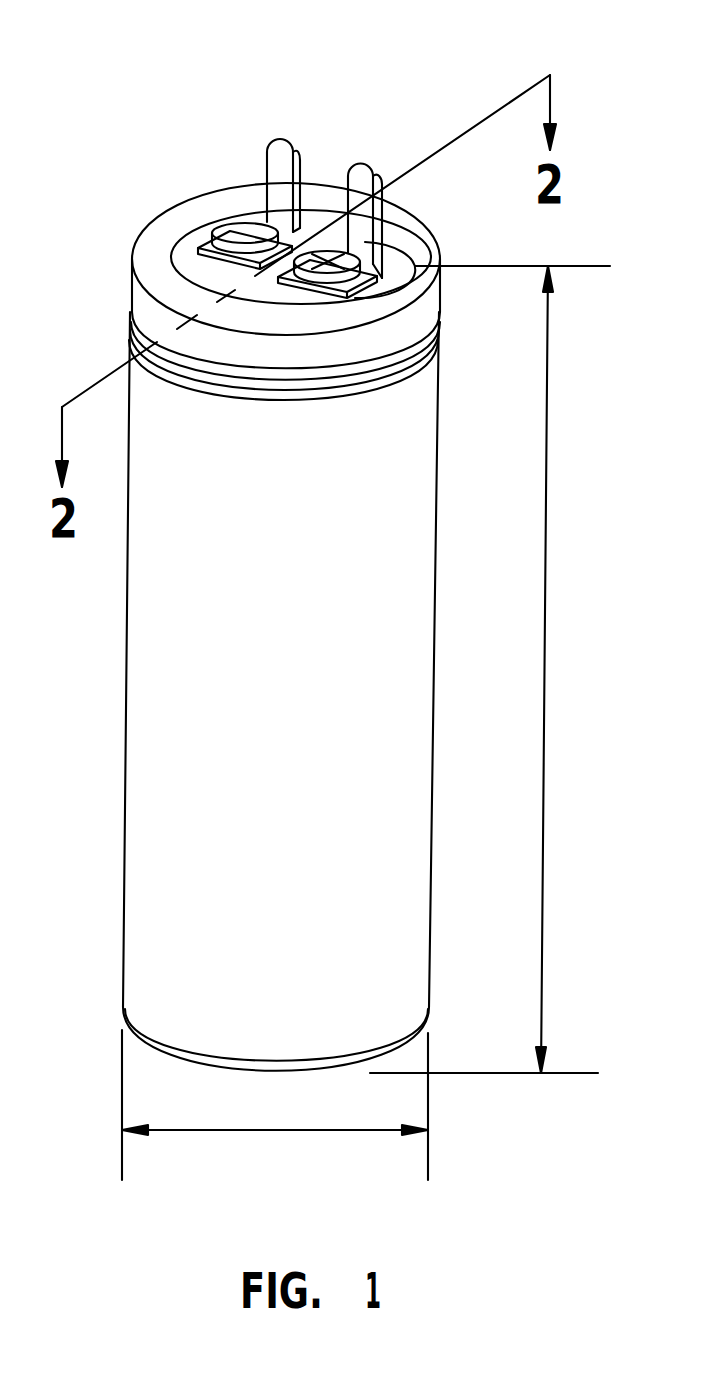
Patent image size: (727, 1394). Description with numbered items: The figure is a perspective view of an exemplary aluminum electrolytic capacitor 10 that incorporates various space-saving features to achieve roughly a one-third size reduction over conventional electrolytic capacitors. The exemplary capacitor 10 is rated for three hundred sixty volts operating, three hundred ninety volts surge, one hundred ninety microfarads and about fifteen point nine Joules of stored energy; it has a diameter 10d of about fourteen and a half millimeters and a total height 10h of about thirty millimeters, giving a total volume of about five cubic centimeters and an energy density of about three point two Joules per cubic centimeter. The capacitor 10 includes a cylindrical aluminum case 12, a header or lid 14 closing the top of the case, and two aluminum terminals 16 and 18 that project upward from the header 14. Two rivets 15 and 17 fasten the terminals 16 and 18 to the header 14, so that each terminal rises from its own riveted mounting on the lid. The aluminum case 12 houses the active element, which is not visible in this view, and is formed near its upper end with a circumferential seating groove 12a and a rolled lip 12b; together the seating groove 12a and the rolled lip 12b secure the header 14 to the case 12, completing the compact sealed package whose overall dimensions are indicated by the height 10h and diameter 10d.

The electrolytic capacitor 10 is at (100, 95).
The cylindrical aluminum case 12 is at (140, 633).
The circumferential seating groove 12a is at (153, 347).
The rolled lip 12b is at (155, 277).
The header 14 is at (188, 252).
The rivet 15 is at (245, 228).
The aluminum terminal 16 is at (273, 148).
The rivet 17 is at (395, 235).
The aluminum terminal 18 is at (363, 173).
The total height 10h is at (545, 668).
The diameter 10d is at (273, 1130).